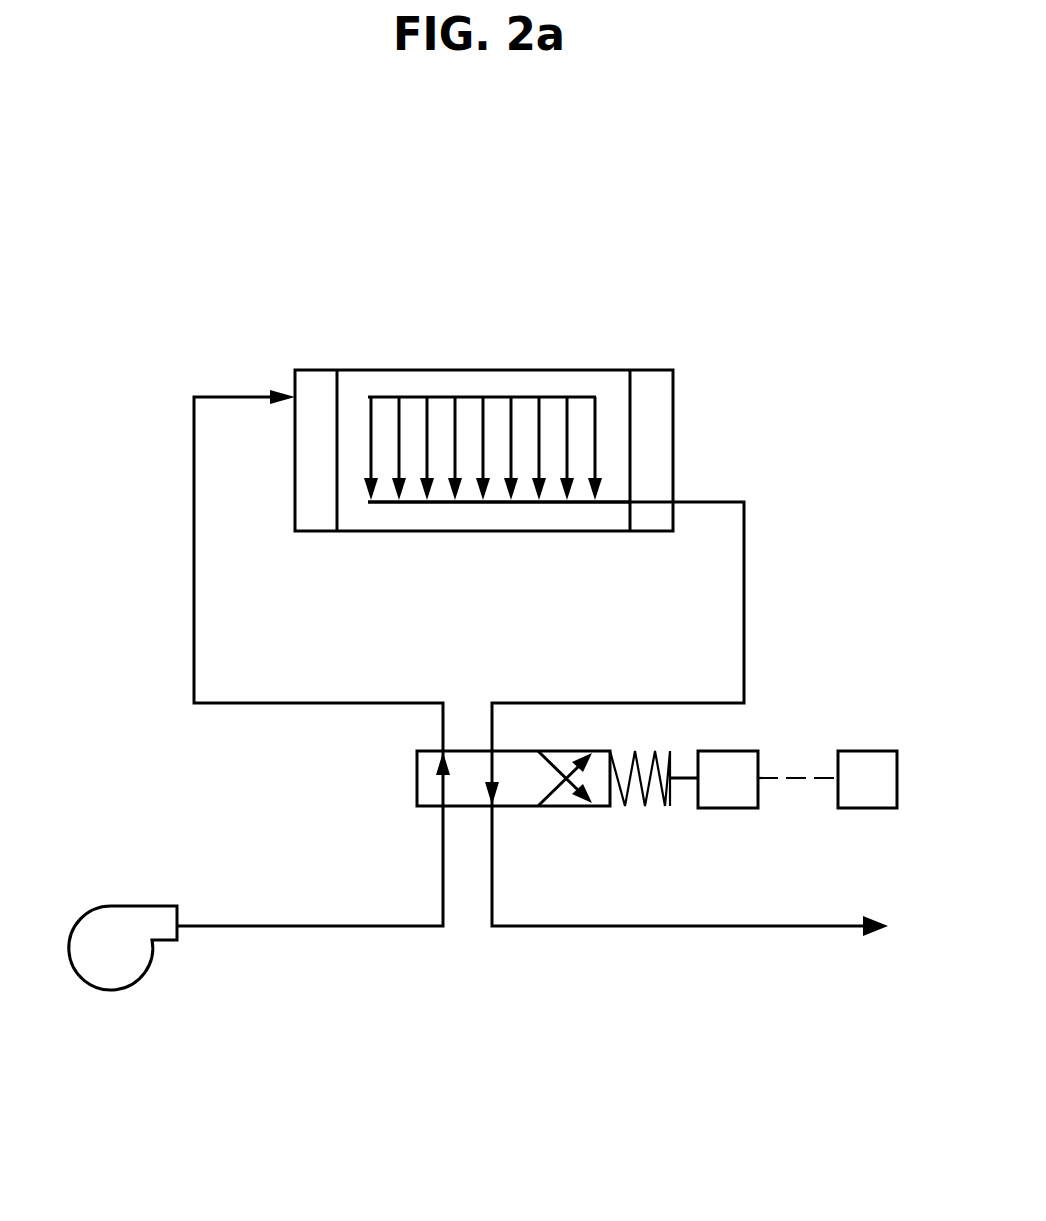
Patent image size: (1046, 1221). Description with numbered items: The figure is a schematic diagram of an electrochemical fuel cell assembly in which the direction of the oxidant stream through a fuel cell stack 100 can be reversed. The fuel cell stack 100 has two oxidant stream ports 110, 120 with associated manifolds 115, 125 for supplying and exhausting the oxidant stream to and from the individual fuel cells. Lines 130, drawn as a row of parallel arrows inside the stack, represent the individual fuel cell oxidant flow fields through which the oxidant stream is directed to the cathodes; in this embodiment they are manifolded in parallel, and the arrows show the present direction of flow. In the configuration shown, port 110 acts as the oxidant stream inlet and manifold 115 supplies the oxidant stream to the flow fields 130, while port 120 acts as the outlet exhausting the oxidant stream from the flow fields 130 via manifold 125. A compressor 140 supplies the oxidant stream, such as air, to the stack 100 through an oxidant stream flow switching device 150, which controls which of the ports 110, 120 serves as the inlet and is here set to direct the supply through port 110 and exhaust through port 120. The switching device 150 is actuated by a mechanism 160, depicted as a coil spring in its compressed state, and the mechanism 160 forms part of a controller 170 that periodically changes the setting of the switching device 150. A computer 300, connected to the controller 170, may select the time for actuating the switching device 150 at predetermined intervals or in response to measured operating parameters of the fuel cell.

The fuel cell stack 100 is at (406, 234).
The oxidant stream port 110 is at (319, 395).
The manifold 115 is at (413, 395).
The oxidant stream port 120 is at (647, 501).
The manifold 125 is at (493, 505).
The oxidant flow fields 130 is at (455, 443).
The compressor 140 is at (110, 992).
The oxidant stream flow switching device 150 is at (427, 788).
The mechanism 160 is at (643, 808).
The controller 170 is at (744, 757).
The computer 300 is at (883, 757).